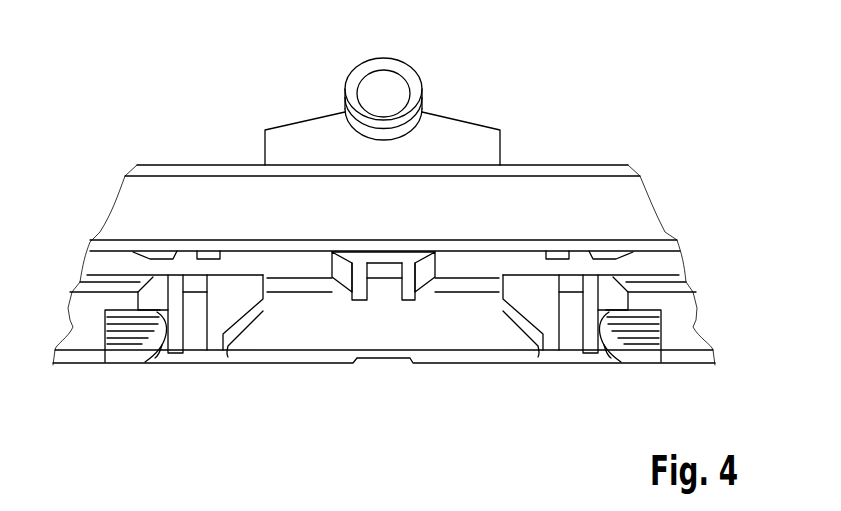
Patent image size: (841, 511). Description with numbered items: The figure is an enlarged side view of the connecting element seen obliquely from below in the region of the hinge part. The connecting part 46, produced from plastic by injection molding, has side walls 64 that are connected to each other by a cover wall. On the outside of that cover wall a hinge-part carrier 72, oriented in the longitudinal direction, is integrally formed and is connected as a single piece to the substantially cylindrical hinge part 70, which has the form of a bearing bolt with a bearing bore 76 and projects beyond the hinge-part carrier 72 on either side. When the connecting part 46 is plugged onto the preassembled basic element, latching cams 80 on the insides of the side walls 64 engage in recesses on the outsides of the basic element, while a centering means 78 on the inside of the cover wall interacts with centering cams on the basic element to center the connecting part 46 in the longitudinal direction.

The connecting part 46 is at (515, 92).
The side walls 64 is at (130, 207).
The hinge part 70 is at (350, 74).
The hinge-part carrier 72 is at (270, 145).
The bearing bore 76 is at (382, 91).
The centering means 78 is at (385, 280).
The latching cams 80 is at (122, 342).